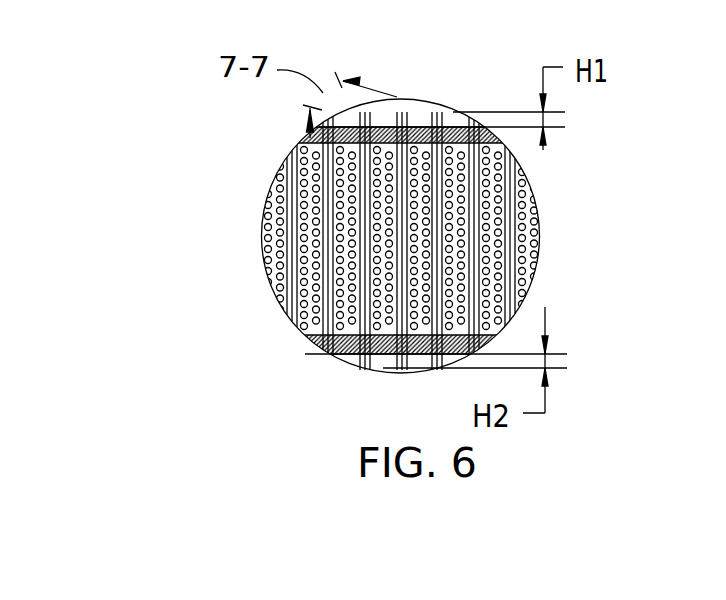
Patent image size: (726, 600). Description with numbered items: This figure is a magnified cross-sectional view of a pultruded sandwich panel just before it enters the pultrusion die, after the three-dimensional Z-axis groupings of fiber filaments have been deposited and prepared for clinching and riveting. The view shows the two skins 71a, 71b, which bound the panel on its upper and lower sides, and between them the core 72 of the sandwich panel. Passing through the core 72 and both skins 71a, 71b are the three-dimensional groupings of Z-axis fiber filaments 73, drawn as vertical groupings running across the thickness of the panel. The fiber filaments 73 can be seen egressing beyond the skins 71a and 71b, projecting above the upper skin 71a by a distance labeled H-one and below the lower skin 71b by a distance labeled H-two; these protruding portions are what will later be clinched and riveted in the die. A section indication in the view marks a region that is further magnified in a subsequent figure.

The skin 71a is at (410, 128).
The skin 71b is at (420, 353).
The core 72 is at (503, 252).
The 3-D groupings of Z-axis fiber filaments 73 is at (323, 225).